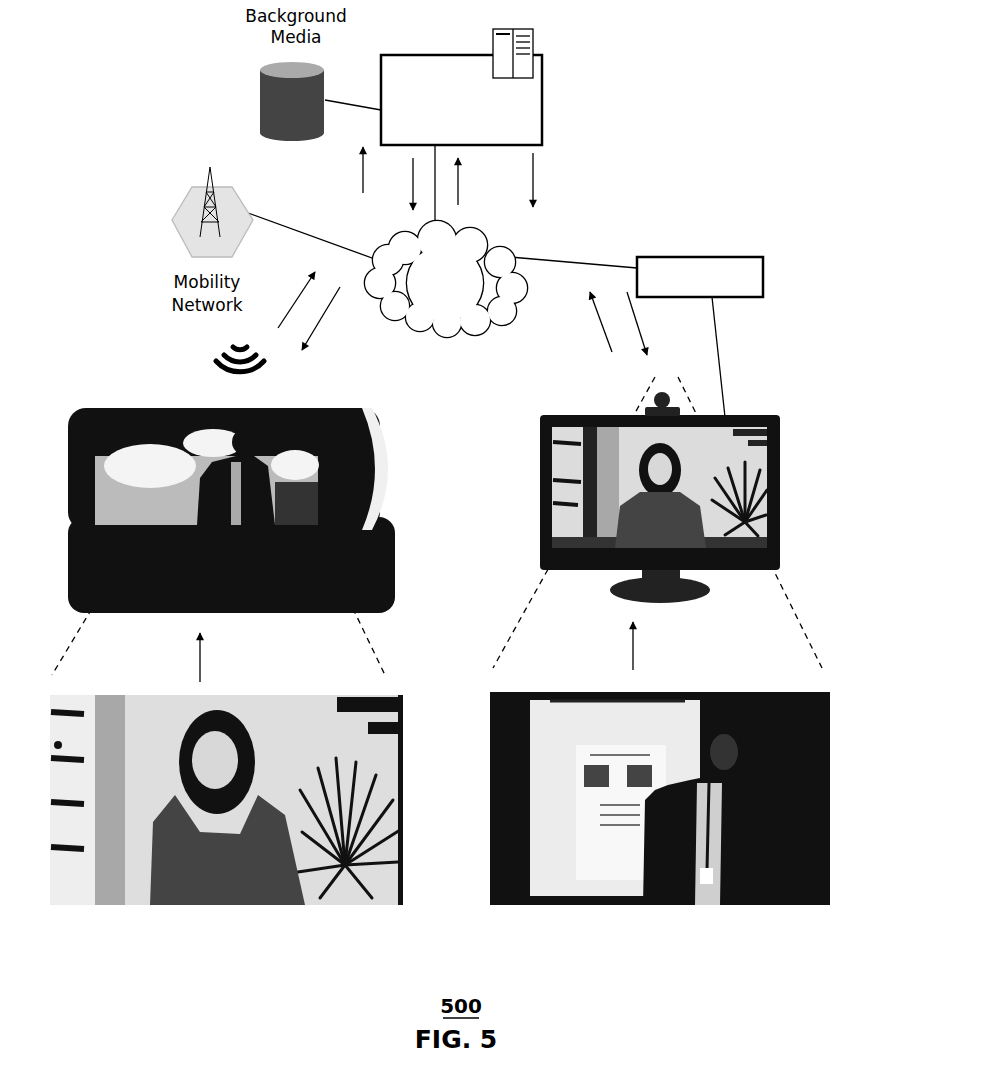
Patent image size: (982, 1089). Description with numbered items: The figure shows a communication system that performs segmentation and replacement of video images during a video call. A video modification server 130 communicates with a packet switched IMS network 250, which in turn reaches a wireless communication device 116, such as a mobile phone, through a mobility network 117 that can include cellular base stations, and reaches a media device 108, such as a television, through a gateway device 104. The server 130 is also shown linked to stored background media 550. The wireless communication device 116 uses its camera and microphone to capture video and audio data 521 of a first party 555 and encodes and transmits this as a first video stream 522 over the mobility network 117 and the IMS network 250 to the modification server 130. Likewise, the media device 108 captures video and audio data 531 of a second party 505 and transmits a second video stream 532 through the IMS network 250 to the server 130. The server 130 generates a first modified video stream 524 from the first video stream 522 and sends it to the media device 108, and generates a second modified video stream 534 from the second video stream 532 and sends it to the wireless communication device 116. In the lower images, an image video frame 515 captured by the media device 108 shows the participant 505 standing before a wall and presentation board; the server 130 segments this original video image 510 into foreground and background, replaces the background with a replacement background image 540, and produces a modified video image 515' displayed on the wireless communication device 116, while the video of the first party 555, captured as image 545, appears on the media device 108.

The background media 550 is at (273, 88).
The video modification server 130 is at (528, 122).
The mobility network 117 is at (202, 203).
The IMS network 250 is at (517, 240).
The gateway device 104 is at (713, 260).
The first video stream 522 is at (363, 172).
The second modified video stream 534 is at (412, 188).
The second video stream 532 is at (458, 177).
The first modified video stream 524 is at (533, 180).
The wireless communication device 116 is at (382, 453).
The modified video image 515' is at (202, 431).
The replacement background image 540 is at (115, 470).
The second party 505 is at (222, 442).
The media device 108 is at (772, 418).
The first party 555 is at (688, 465).
The video and audio data 521 is at (200, 663).
The video and audio data 531 is at (633, 653).
The second video image 545 is at (322, 900).
The original video image 510 is at (595, 855).
The image video frame 515 is at (664, 839).